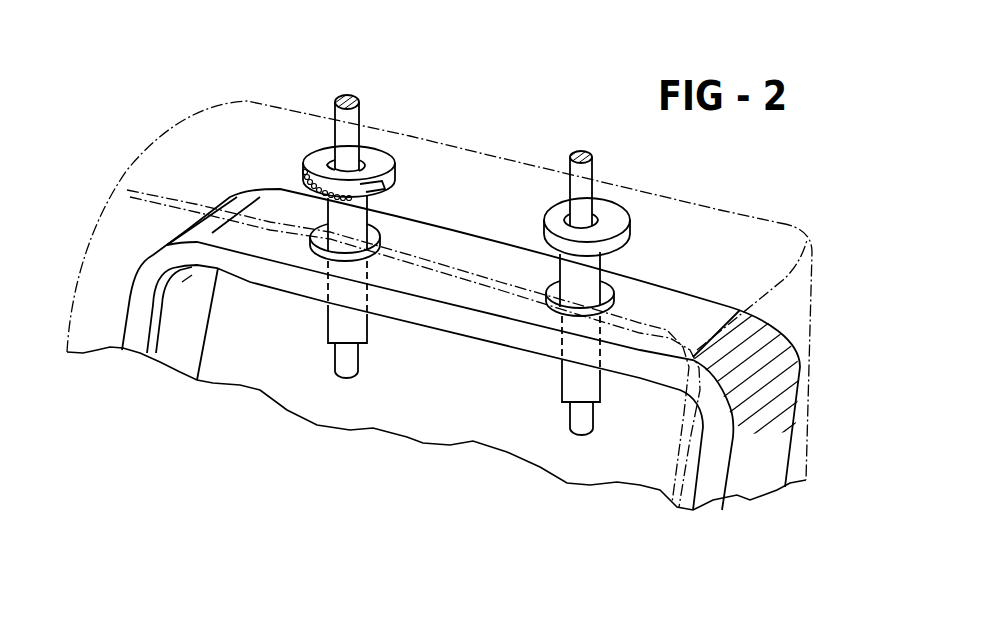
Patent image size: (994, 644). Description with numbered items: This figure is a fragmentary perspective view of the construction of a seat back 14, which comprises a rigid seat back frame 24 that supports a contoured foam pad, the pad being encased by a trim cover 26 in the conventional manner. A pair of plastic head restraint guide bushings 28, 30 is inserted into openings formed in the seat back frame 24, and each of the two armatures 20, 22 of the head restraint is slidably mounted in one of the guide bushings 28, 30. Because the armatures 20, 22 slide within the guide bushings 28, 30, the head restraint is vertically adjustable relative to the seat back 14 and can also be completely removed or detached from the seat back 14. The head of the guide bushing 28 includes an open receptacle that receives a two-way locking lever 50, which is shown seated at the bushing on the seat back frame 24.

The seat back 14 is at (142, 157).
The armature 20 is at (342, 115).
The armature 22 is at (587, 170).
The seat back frame 24 is at (780, 438).
The trim cover 26 is at (770, 222).
The head restraint guide bushing 28 is at (377, 152).
The head restraint guide bushing 30 is at (615, 213).
The two-way locking lever 50 is at (307, 173).